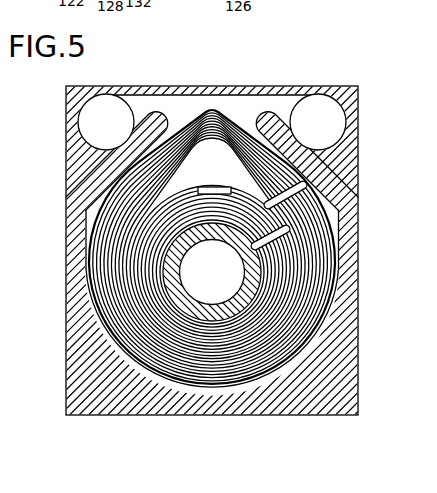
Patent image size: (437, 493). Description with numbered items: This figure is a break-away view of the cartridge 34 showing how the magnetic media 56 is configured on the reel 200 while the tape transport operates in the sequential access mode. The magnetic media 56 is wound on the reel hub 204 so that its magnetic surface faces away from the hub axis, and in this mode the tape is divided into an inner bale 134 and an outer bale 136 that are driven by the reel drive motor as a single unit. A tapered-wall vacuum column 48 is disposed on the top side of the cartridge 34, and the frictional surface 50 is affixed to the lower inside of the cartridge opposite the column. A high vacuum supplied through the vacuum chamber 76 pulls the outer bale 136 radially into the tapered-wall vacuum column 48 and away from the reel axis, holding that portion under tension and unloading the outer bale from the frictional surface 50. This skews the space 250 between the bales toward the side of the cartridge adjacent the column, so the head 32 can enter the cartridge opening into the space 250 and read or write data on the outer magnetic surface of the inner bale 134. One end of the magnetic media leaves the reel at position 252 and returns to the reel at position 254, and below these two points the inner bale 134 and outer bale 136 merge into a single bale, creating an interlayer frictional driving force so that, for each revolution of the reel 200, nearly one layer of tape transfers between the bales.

The cartridge 34 is at (359, 394).
The frictional surface 50 is at (245, 397).
The vacuum chamber 76 is at (90, 116).
The position 252 is at (138, 293).
The space 250 is at (178, 188).
The magnetic media 56 is at (300, 295).
The position 254 is at (312, 295).
The reel 200 is at (97, 215).
The tapered-wall vacuum column 48 is at (206, 106).
The reel hub 204 is at (249, 283).
The head 32 is at (203, 186).
The outer bale 136 is at (303, 186).
The inner bale 134 is at (284, 231).